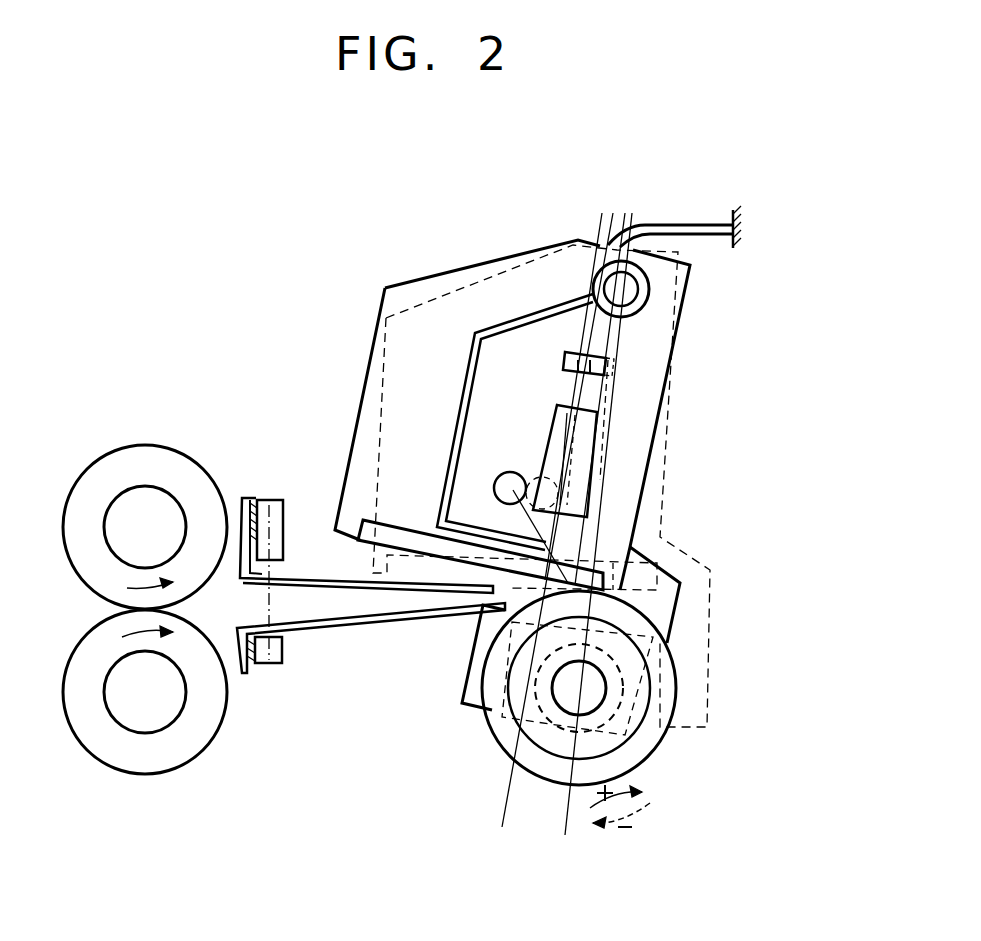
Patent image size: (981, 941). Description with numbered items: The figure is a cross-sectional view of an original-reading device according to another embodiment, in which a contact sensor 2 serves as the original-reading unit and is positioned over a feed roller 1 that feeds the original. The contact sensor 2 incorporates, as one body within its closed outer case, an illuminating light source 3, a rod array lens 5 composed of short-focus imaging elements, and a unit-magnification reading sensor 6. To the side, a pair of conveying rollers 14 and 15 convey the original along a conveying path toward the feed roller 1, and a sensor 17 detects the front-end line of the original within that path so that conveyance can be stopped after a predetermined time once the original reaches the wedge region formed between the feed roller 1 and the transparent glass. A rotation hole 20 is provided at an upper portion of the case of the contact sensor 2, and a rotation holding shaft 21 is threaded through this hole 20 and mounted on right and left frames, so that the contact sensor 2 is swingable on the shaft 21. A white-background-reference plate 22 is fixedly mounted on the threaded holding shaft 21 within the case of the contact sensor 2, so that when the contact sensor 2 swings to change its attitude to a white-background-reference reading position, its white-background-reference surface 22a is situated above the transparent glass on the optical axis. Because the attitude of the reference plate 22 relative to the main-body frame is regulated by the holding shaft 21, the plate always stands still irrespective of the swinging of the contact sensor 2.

The feed roller 1 is at (613, 743).
The contact sensor 2 is at (403, 363).
The illuminating light source 3 is at (510, 471).
The rod array lens 5 is at (553, 442).
The unit-magnification reading sensor 6 is at (565, 357).
The conveying roller 14 is at (160, 755).
The conveying roller 15 is at (158, 460).
The sensor 17 is at (277, 503).
The rotation hole 20 is at (637, 300).
The rotation holding shaft 21 is at (627, 283).
The white-background-reference plate 22 is at (455, 429).
The white-background-reference surface 22a is at (542, 547).